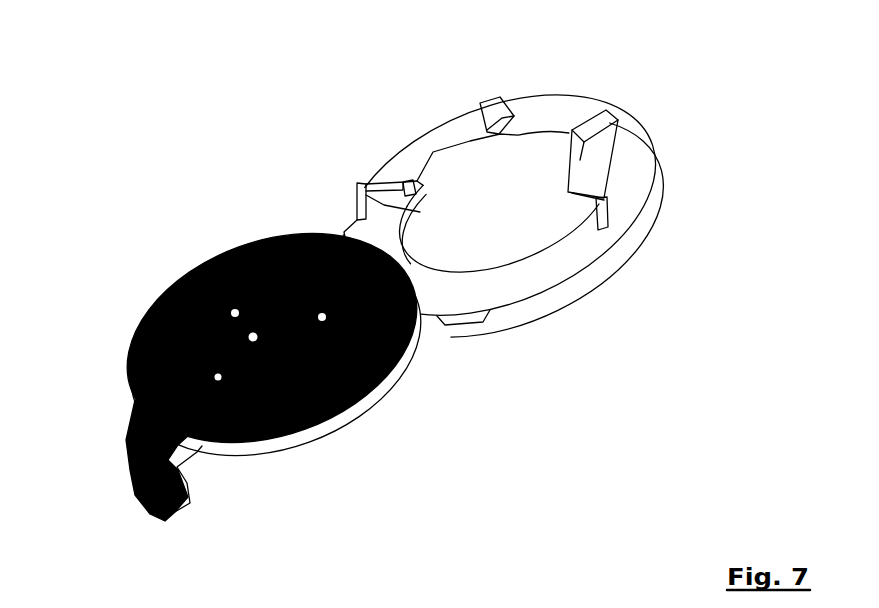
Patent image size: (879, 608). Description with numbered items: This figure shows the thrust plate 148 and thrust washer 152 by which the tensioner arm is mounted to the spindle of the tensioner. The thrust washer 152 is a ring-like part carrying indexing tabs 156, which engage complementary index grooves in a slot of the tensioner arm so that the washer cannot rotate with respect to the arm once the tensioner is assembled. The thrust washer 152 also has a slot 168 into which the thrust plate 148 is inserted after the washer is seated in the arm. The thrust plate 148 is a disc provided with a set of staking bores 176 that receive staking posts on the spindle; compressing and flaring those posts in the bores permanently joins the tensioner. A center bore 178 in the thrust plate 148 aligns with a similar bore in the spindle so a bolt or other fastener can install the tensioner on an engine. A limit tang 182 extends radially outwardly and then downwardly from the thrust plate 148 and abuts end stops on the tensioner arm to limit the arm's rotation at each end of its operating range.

The thrust plate 148 is at (197, 330).
The thrust washer 152 is at (400, 158).
The indexing tabs 156 is at (595, 113).
The slot 168 is at (590, 213).
The staking bores 176 is at (321, 312).
The center bore 178 is at (300, 410).
The limit tang 182 is at (130, 467).